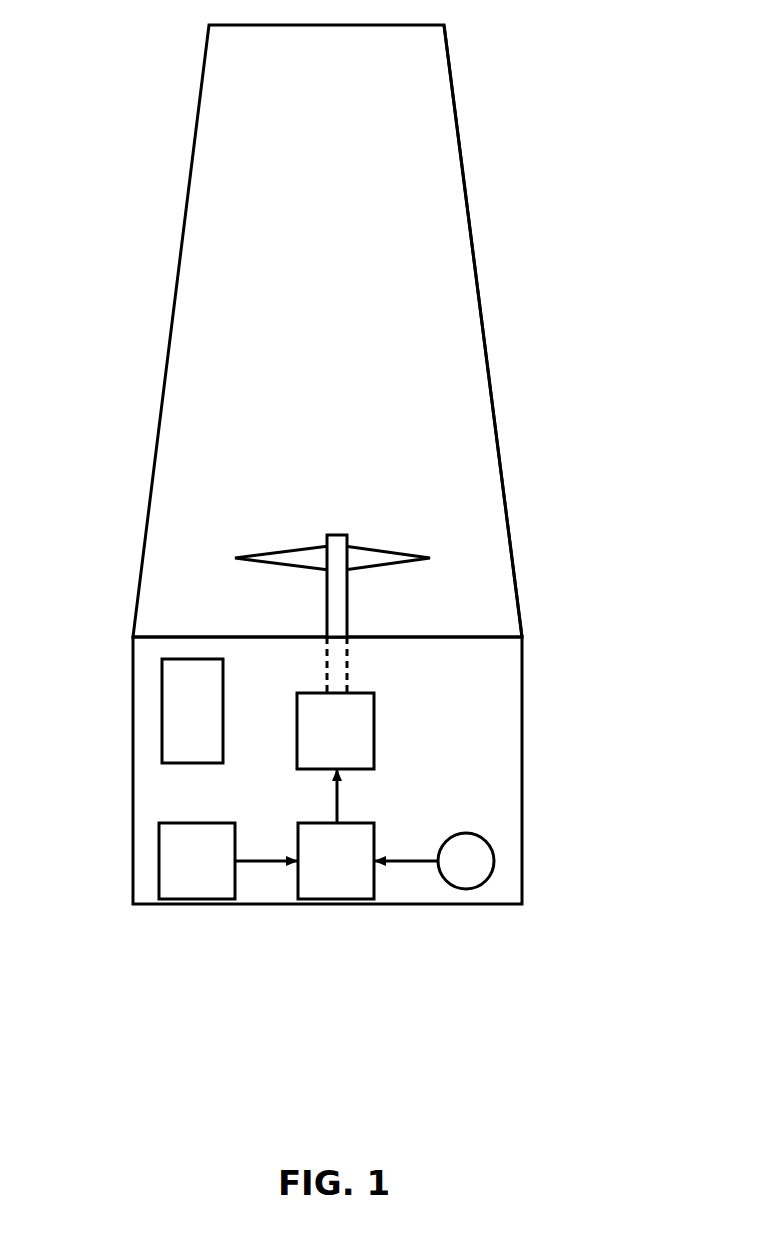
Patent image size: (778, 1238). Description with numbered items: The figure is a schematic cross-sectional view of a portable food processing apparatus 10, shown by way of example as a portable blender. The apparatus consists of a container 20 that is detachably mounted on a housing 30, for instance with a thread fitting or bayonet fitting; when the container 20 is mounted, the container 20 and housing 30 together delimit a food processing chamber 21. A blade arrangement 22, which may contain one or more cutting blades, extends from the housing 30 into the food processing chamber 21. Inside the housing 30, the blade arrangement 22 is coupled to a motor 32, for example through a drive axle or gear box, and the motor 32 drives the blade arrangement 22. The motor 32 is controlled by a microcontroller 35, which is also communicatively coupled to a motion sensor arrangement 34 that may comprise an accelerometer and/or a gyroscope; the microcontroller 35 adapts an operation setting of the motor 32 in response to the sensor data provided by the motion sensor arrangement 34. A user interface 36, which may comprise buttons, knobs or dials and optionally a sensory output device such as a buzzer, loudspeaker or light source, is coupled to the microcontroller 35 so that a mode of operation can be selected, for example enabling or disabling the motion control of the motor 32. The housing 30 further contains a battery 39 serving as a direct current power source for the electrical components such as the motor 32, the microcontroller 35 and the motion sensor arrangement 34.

The portable food processing apparatus 10 is at (343, 1119).
The container 20 is at (487, 343).
The food processing chamber 21 is at (437, 225).
The blade arrangement 22 is at (365, 557).
The housing 30 is at (522, 760).
The motor 32 is at (357, 739).
The motion sensor arrangement 34 is at (195, 880).
The microcontroller 35 is at (332, 880).
The user interface 36 is at (468, 880).
The battery 39 is at (177, 718).